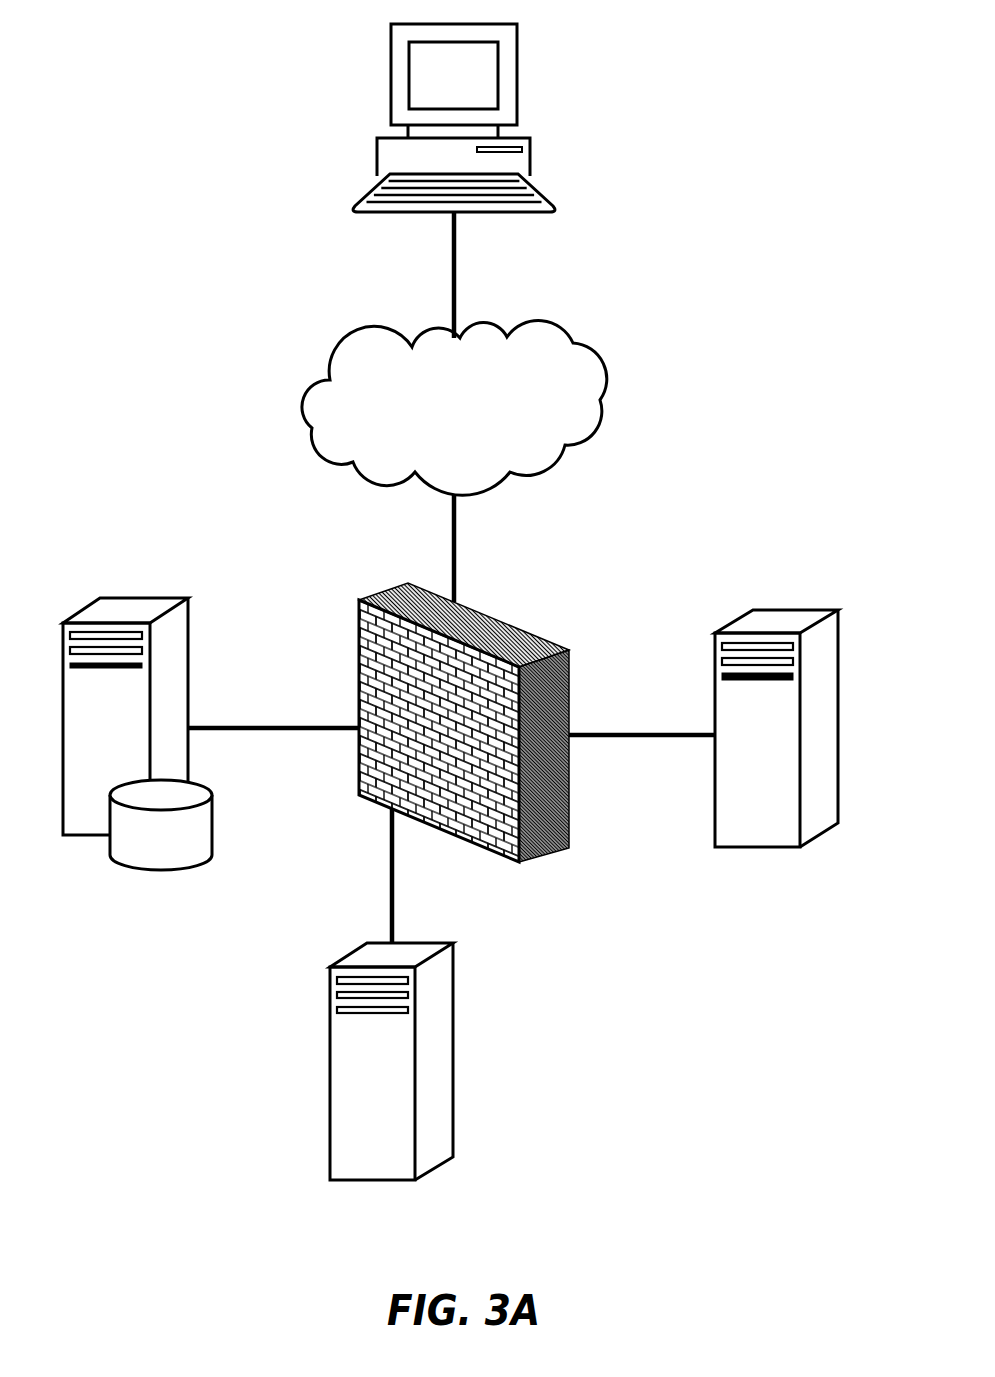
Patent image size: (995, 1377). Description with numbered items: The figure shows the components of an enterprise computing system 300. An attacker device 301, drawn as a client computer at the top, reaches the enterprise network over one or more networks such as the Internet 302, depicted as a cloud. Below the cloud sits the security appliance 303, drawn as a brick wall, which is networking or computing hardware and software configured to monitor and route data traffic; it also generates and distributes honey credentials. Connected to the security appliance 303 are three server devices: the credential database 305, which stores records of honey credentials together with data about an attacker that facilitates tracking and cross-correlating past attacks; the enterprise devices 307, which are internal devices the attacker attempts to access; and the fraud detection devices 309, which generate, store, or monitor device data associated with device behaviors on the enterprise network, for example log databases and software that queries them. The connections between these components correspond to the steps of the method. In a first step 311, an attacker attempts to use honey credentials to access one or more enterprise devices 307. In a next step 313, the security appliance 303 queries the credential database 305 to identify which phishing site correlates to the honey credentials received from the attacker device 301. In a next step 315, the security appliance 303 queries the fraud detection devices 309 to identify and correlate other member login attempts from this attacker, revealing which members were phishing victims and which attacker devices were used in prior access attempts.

The enterprise computing system 300 is at (146, 61).
The attacker device 301 is at (454, 118).
The Internet 302 is at (454, 408).
The security appliance 303 is at (532, 620).
The credential database 305 is at (137, 734).
The enterprise device 307 is at (391, 1061).
The fraud detection device 309 is at (776, 728).
The first step 311 is at (419, 548).
The next step 313 is at (273, 711).
The next step 315 is at (642, 718).